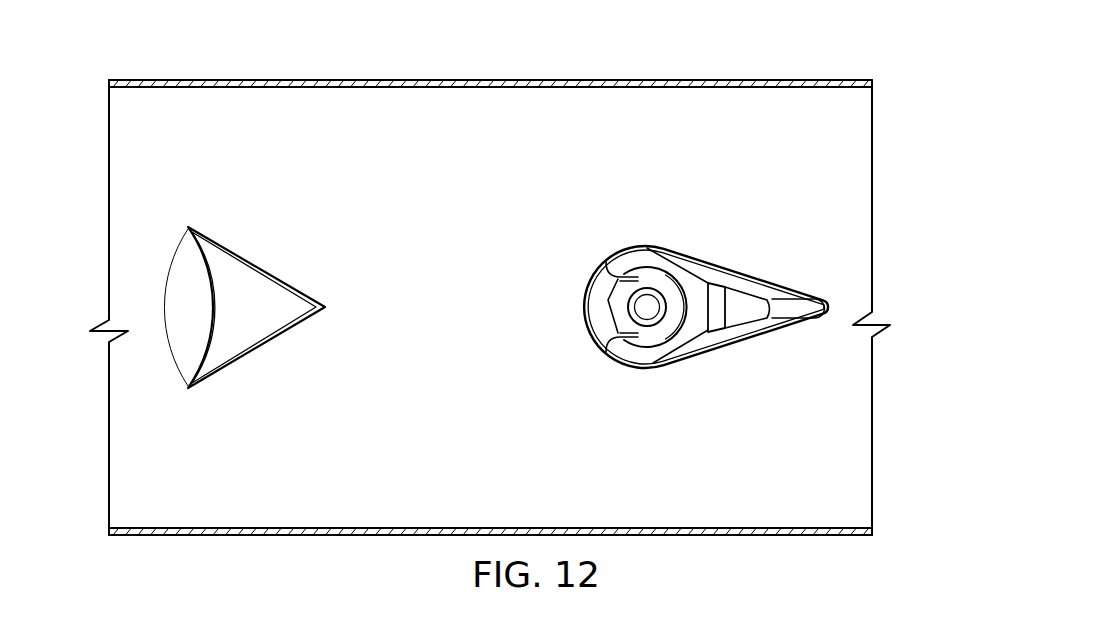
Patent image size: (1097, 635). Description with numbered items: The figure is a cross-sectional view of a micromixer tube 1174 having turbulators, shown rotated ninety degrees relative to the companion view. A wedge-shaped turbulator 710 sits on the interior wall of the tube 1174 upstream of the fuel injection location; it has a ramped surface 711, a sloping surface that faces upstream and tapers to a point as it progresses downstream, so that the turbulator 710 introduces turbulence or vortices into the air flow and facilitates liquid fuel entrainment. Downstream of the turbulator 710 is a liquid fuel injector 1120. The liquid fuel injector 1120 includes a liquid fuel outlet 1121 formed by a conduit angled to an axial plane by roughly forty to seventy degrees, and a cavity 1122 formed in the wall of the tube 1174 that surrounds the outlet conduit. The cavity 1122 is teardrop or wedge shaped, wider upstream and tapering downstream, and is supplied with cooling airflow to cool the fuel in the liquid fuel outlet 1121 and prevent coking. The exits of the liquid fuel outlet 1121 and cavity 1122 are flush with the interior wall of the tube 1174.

The turbulator 710 is at (253, 254).
The ramped surface 711 is at (207, 312).
The liquid fuel injector 1120 is at (712, 237).
The liquid fuel outlet 1121 is at (648, 297).
The cavity 1122 is at (738, 305).
The micromixer tube 1174 is at (810, 61).